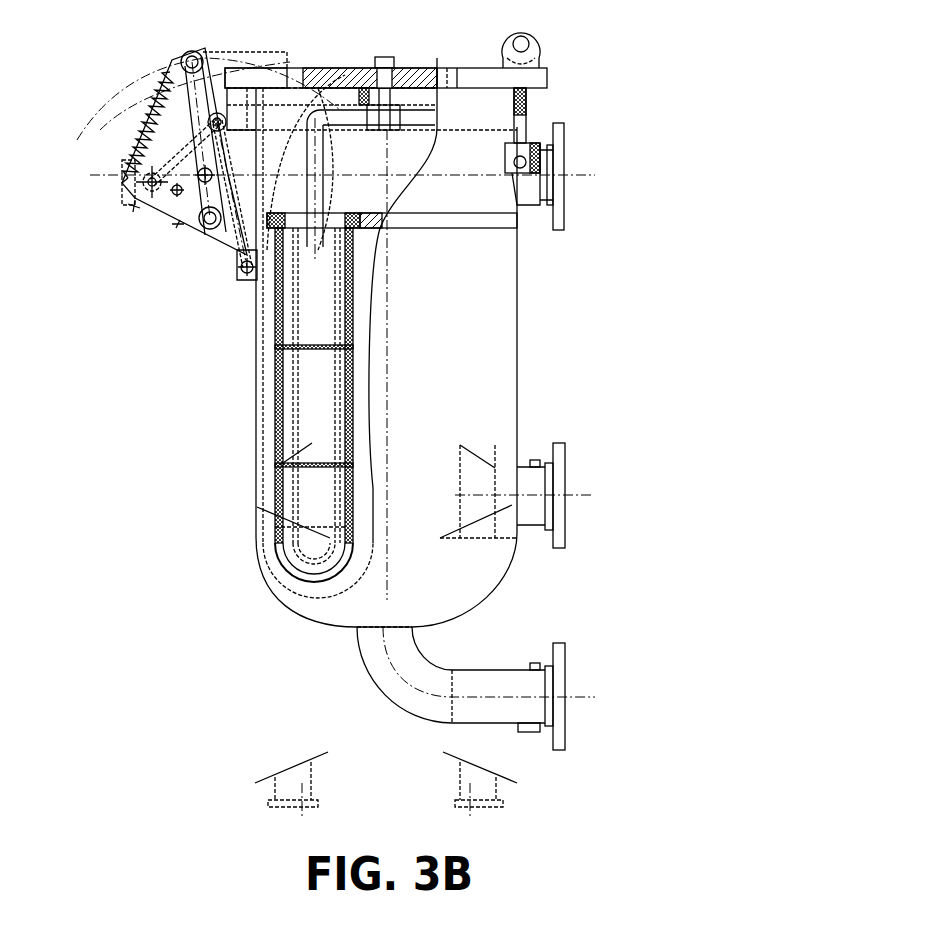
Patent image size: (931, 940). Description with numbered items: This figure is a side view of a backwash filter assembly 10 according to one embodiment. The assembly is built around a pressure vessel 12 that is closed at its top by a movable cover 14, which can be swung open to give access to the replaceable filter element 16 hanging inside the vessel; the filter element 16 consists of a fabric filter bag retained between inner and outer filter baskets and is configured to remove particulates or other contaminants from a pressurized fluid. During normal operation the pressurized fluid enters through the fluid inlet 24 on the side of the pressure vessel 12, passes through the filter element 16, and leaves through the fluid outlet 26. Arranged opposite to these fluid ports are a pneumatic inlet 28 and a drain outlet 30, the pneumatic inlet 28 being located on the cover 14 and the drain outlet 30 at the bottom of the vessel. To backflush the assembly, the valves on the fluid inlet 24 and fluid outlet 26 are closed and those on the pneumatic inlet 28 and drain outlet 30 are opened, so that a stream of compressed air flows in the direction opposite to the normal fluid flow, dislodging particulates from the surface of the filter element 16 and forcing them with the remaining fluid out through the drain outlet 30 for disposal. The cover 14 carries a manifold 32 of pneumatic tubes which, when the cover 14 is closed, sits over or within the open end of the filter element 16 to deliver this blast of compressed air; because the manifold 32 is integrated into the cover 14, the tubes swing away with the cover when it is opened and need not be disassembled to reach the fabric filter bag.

The backwash filter assembly 10 is at (556, 301).
The pressure vessel 12 is at (497, 407).
The cover 14 is at (545, 78).
The filter element 16 is at (313, 417).
The fluid inlet 24 is at (563, 478).
The fluid outlet 26 is at (563, 165).
The pneumatic inlet 28 is at (386, 57).
The drain outlet 30 is at (563, 705).
The manifold 32 is at (338, 110).